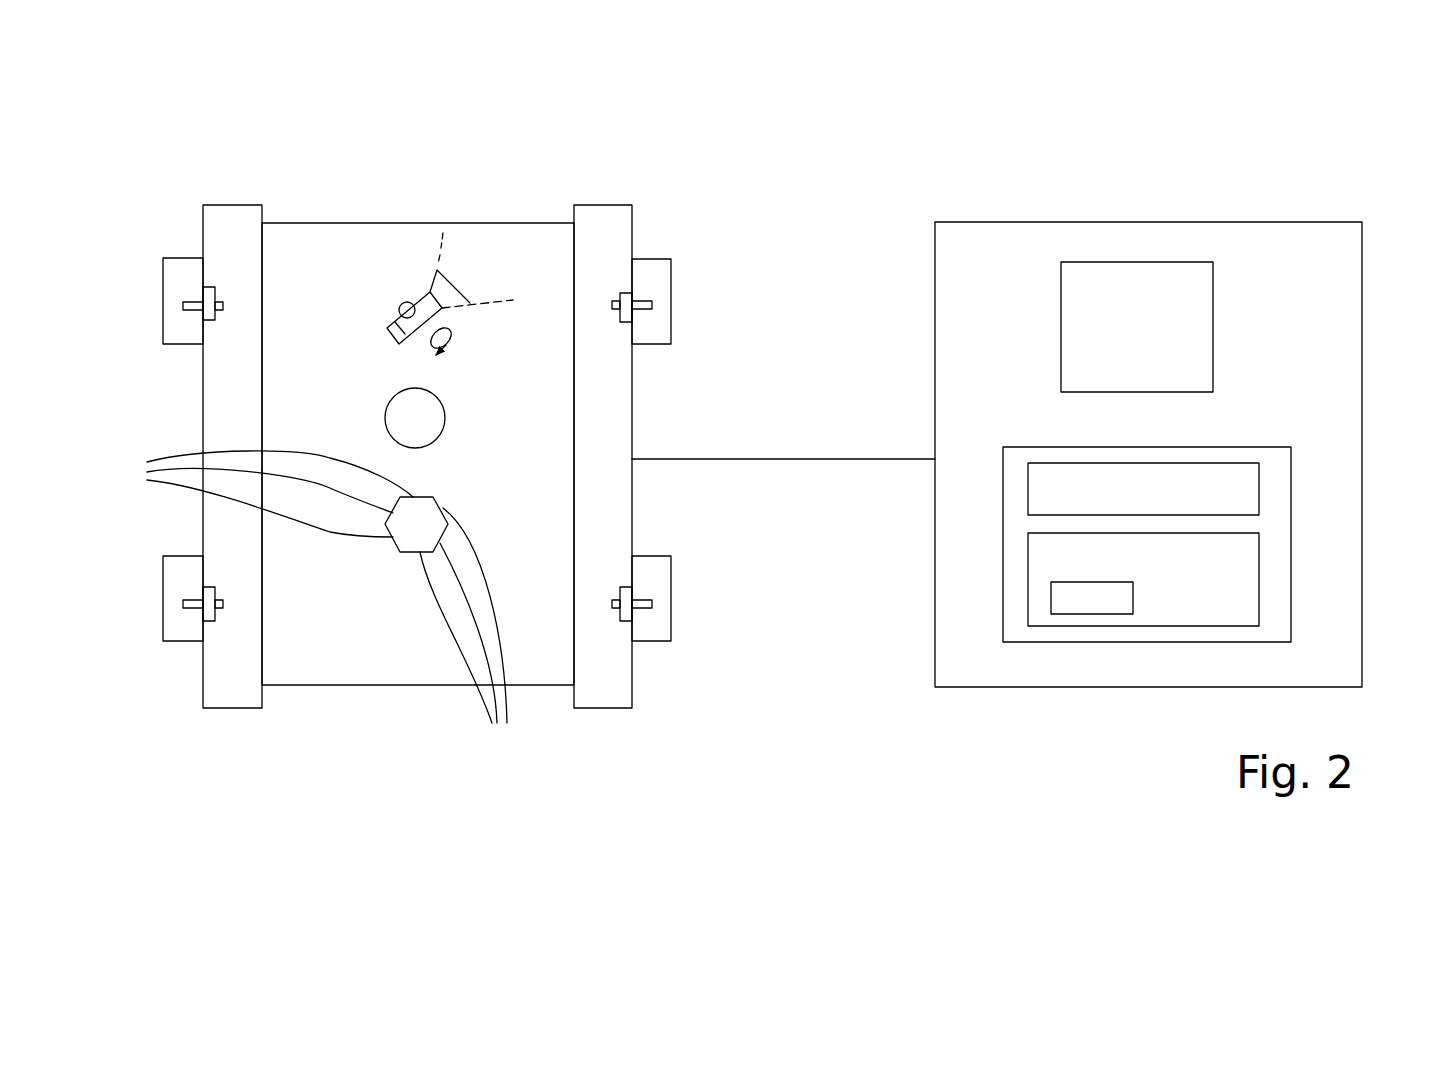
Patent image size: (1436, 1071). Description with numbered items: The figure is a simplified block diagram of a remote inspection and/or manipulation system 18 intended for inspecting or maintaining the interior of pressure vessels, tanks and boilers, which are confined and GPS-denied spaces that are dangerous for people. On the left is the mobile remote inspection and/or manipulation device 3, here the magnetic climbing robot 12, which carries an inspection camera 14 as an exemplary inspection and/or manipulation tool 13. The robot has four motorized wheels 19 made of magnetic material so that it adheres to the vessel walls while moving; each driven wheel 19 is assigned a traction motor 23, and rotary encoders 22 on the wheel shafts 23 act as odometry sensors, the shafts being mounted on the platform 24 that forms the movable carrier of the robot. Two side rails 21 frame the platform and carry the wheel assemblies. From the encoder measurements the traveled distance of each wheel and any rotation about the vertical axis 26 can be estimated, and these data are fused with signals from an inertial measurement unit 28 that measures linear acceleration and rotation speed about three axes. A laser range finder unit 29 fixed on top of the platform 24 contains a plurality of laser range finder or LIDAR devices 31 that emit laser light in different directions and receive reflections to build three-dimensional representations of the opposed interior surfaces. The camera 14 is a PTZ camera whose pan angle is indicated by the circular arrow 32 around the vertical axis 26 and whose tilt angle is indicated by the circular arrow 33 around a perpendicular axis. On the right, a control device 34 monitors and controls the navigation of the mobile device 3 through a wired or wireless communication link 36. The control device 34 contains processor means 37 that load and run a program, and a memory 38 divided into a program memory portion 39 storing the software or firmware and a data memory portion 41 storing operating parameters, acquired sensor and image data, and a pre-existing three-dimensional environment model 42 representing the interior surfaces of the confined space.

The mobile remote inspection and/or manipulation device 3 is at (276, 197).
The magnetic climbing robot 12 is at (186, 413).
The inspection and/or manipulation tool 13 is at (415, 278).
The inspection camera 14 is at (440, 276).
The remote inspection and/or manipulation system 18 is at (126, 191).
The motorized wheels 19 is at (182, 273).
The side rail 21 is at (215, 290).
The rotary encoders 22 is at (205, 315).
The traction motor 23 is at (200, 305).
The platform 24 is at (423, 657).
The vertical axis 26 is at (398, 316).
The inertial measurement unit 28 is at (427, 420).
The laser range finder unit 29 is at (389, 578).
The laser range finder devices 31 is at (315, 606).
The circular arrow 32 is at (402, 306).
The circular arrow 33 is at (455, 342).
The control device 34 is at (1317, 247).
The communication link 36 is at (872, 452).
The processor means 37 is at (1138, 299).
The memory 38 is at (1277, 464).
The program memory portion 39 is at (1240, 496).
The data memory portion 41 is at (1240, 594).
The three-dimensional environment model 42 is at (1091, 602).